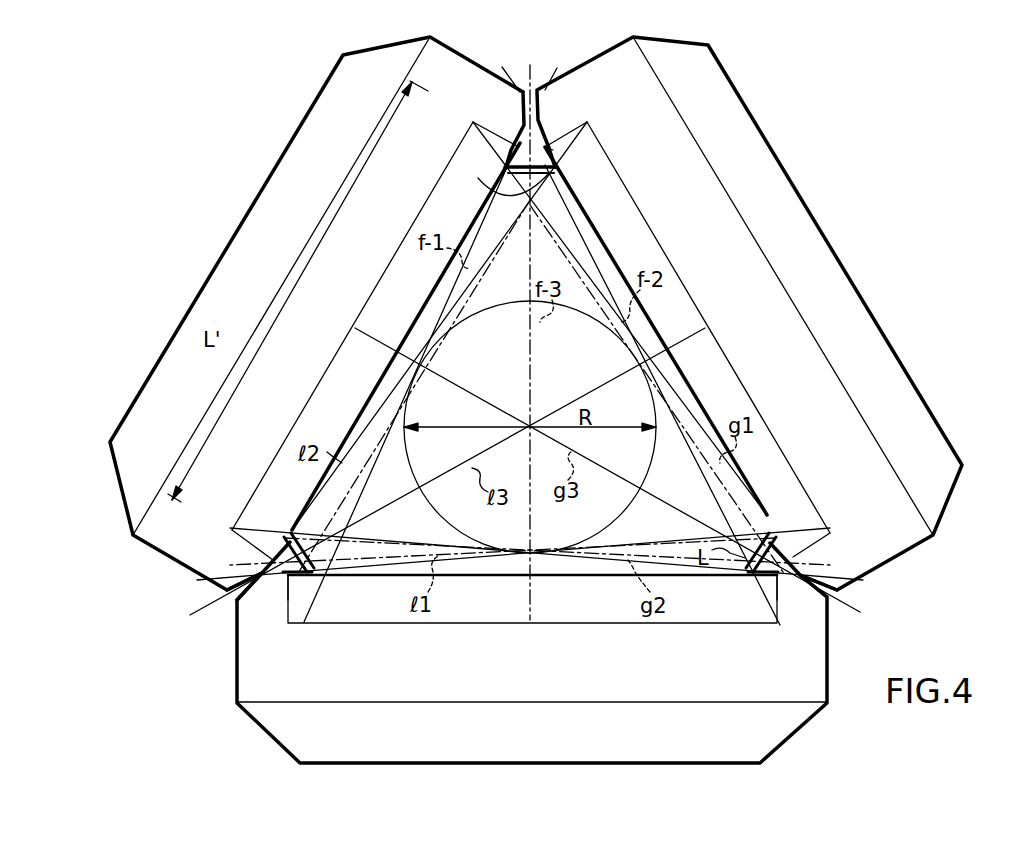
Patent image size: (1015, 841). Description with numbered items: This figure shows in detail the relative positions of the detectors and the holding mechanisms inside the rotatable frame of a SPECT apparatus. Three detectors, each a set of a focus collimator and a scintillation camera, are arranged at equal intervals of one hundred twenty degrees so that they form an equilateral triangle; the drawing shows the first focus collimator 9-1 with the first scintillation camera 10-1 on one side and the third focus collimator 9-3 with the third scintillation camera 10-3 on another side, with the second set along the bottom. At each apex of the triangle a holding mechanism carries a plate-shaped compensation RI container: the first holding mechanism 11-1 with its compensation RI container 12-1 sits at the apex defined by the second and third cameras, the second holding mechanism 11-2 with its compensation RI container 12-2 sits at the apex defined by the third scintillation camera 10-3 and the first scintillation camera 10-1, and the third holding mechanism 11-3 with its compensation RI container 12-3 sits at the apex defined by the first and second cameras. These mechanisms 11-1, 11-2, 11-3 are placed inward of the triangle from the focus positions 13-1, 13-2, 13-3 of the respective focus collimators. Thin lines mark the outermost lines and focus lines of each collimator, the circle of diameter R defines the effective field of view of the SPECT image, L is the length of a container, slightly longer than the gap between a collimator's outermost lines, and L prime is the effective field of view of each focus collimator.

The first focus collimator 9-1 is at (636, 218).
The third focus collimator 9-3 is at (400, 248).
The first scintillation camera 10-1 is at (728, 236).
The third scintillation camera 10-3 is at (300, 266).
The first holding mechanism 11-1 is at (305, 535).
The second holding mechanism 11-2 is at (512, 178).
The third holding mechanism 11-3 is at (768, 535).
The compensation RI container 12-1 is at (284, 588).
The compensation RI container 12-2 is at (553, 150).
The compensation RI container 12-3 is at (778, 585).
The focus position 13-1 is at (260, 573).
The focus position 13-2 is at (540, 133).
The focus position 13-3 is at (785, 580).